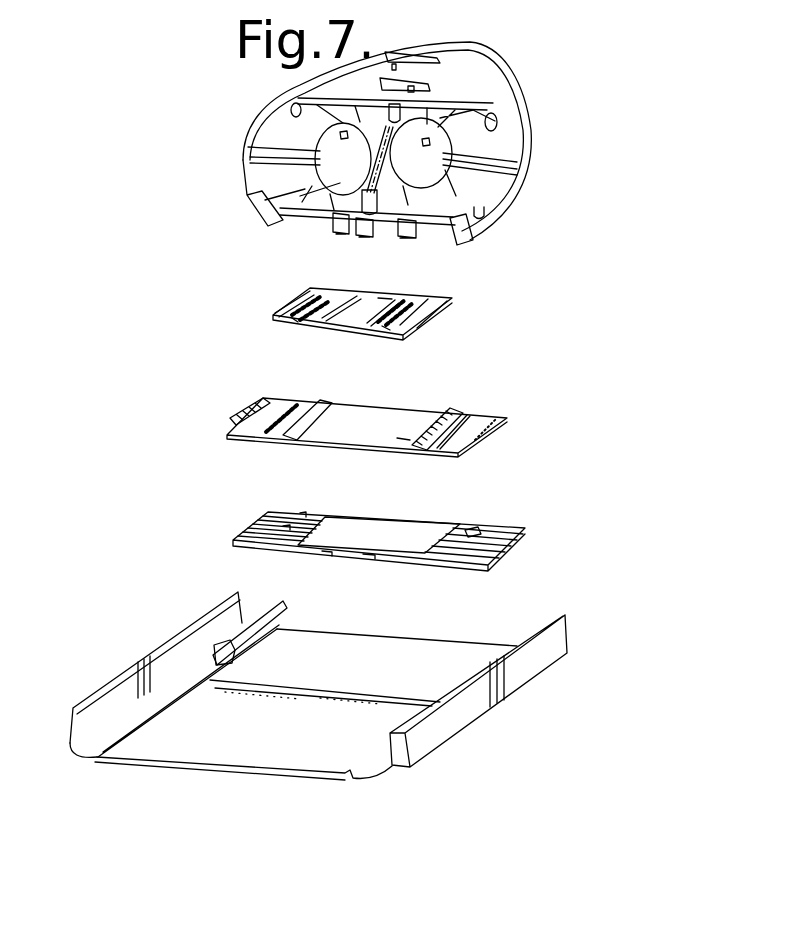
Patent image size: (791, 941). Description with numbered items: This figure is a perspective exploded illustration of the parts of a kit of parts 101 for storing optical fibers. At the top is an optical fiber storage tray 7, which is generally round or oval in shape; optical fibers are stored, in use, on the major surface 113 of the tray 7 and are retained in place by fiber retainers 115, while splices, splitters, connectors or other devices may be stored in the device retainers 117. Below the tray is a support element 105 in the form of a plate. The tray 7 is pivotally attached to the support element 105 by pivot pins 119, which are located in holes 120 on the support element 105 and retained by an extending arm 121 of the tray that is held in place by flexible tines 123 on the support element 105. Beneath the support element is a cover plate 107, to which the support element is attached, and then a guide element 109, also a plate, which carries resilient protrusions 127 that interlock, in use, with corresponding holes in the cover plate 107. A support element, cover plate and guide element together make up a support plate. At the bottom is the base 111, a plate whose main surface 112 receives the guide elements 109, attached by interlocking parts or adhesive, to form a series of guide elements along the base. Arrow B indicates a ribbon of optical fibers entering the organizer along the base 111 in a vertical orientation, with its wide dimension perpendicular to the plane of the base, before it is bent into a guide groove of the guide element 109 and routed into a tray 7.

The optical fiber storage tray 7 is at (540, 161).
The kit of parts 101 is at (152, 380).
The support element 105 is at (468, 312).
The cover plate 107 is at (510, 436).
The guide element 109 is at (543, 541).
The base 111 is at (518, 616).
The main surface of the base 112 is at (153, 727).
The major surface of the tray 113 is at (474, 118).
The fiber retainer 115 is at (262, 150).
The device retainer 117 is at (424, 88).
The pivot pin 119 is at (333, 225).
The hole 120 is at (302, 322).
The extending arm 121 is at (360, 237).
The flexible tine 123 is at (391, 255).
The resilient protrusion 127 is at (477, 527).
The arrow B is at (233, 642).